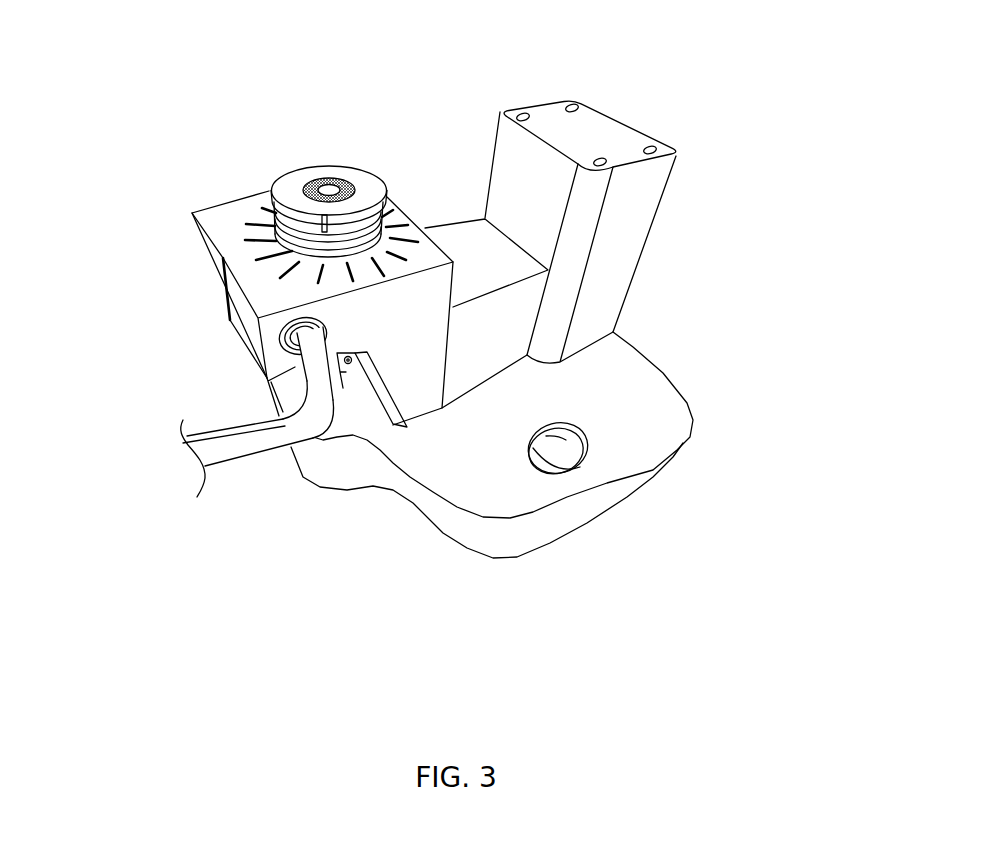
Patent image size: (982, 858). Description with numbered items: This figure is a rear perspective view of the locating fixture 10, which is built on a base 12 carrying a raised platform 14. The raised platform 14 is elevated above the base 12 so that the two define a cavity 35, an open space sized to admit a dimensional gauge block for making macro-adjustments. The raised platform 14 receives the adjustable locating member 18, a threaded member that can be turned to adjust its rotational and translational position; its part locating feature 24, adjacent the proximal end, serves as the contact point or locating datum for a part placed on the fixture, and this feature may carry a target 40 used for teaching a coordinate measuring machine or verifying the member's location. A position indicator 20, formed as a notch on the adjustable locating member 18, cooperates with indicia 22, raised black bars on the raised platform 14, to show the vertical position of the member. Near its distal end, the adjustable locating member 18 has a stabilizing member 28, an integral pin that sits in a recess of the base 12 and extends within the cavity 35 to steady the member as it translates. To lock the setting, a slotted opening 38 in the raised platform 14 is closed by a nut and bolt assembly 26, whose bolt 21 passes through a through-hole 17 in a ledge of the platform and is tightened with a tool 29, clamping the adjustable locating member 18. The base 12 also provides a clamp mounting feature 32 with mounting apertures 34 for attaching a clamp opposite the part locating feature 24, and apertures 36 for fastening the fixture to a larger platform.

The locating fixture 10 is at (713, 68).
The base 12 is at (670, 425).
The raised platform 14 is at (265, 308).
The through-hole 17 is at (330, 315).
The adjustable locating member 18 is at (270, 215).
The position indicator 20 is at (292, 180).
The bolt 21 is at (292, 328).
The indicia 22 is at (272, 278).
The part locating feature 24 is at (365, 187).
The nut and bolt assembly 26 is at (330, 328).
The stabilizing member 28 is at (348, 390).
The tool 29 is at (260, 456).
The clamp mounting feature 32 is at (626, 211).
The mounting apertures 34 is at (673, 154).
The cavity 35 is at (344, 410).
The apertures 36 is at (575, 455).
The slotted opening 38 is at (217, 256).
The target 40 is at (323, 187).